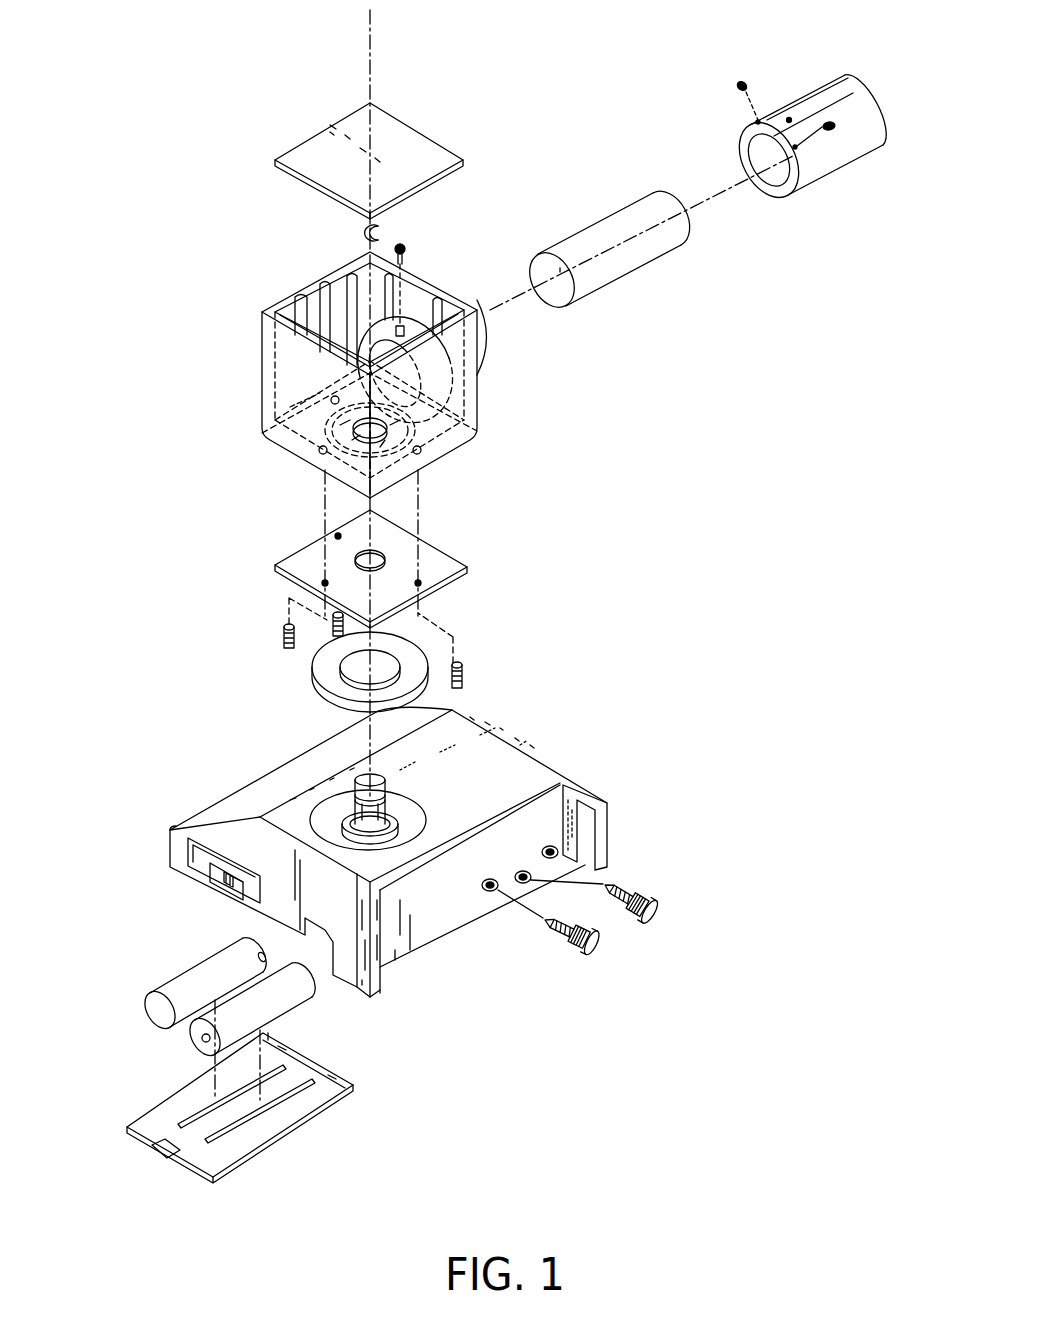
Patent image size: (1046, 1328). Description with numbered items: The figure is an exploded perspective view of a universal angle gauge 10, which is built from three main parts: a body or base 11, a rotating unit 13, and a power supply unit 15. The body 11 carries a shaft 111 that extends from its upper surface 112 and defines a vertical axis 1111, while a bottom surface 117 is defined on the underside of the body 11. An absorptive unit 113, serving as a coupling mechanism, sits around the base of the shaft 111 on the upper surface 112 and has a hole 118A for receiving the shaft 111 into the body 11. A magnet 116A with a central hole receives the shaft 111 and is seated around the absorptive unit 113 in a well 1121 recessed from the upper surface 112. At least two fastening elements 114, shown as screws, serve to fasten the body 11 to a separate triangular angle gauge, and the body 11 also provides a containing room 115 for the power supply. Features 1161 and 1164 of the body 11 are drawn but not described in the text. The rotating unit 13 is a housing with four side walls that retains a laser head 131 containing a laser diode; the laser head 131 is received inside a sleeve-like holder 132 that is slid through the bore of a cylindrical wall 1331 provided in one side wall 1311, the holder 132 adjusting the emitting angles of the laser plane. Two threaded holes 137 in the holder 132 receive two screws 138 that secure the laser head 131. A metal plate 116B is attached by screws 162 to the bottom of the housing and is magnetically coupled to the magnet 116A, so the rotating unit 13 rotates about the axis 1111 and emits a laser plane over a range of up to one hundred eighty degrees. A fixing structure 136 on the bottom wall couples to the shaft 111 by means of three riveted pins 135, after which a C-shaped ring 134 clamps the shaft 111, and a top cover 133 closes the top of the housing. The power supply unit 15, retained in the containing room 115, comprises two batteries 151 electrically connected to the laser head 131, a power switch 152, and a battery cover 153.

The universal angle gauge 10 is at (190, 405).
The body 11 is at (230, 833).
The rotating unit 13 is at (307, 292).
The power supply unit 15 is at (76, 848).
The shaft 111 is at (365, 775).
The upper surface 112 is at (477, 742).
The absorptive unit 113 is at (340, 815).
The fastening elements 114 is at (653, 897).
The containing room 115 is at (210, 885).
The magnet 116A is at (320, 657).
The metal plate 116B is at (277, 558).
The bottom surface 117 is at (225, 895).
The hole 118A is at (400, 832).
The vertical axis 1111 is at (367, 68).
The well 1121 is at (415, 812).
The side wall 1161 is at (400, 940).
The flange 1164 is at (552, 848).
The laser head 131 is at (590, 243).
The holder 132 is at (825, 93).
The top cover 133 is at (317, 145).
The C-shaped ring 134 is at (357, 233).
The pins 135 is at (282, 372).
The fixing structure 136 is at (318, 422).
The threaded holes 137 is at (758, 120).
The screws 138 is at (738, 83).
The side wall 1311 is at (413, 273).
The cylindrical wall 1331 is at (410, 323).
The batteries 151 is at (195, 983).
The power switch 152 is at (187, 848).
The battery cover 153 is at (287, 1118).
The screws 162 is at (285, 637).